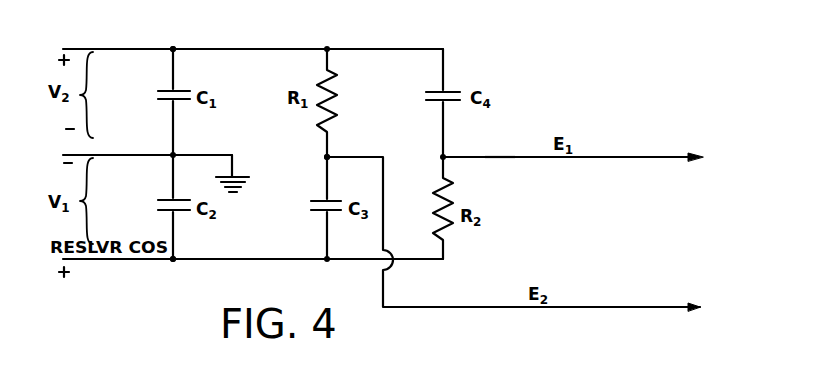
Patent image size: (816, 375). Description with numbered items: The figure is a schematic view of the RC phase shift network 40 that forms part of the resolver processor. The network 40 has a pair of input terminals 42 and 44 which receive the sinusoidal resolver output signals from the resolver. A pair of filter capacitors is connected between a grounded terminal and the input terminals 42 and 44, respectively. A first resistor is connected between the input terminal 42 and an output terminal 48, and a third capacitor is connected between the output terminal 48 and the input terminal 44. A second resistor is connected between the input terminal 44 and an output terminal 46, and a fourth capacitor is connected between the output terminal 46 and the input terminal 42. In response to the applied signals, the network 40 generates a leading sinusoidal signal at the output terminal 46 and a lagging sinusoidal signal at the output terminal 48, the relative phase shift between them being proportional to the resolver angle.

The RC phase shift network 40 is at (567, 78).
The input terminal 42 is at (173, 49).
The input terminal 44 is at (173, 259).
The output terminal 46 is at (500, 157).
The output terminal 48 is at (327, 157).